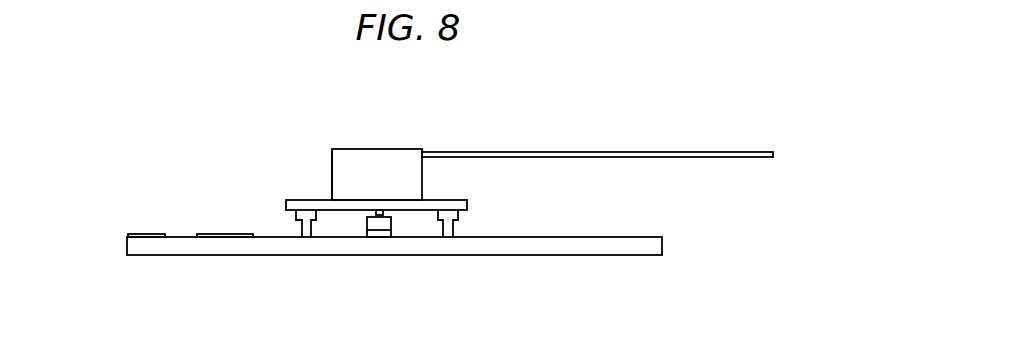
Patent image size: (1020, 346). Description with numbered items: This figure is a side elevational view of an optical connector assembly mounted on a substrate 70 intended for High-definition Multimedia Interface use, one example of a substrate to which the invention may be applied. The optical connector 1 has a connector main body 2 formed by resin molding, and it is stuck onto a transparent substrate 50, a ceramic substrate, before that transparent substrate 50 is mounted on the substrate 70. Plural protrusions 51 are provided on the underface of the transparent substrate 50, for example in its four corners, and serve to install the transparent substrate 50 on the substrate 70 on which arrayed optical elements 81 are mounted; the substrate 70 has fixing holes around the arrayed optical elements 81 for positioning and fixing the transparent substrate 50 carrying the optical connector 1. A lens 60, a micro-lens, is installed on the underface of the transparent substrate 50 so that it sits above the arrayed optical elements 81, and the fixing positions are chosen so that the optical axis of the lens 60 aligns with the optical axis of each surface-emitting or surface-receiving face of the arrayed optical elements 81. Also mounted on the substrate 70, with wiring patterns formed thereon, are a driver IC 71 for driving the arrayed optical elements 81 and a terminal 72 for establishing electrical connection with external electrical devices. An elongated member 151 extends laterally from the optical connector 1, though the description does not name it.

The optical connector 1 is at (378, 148).
The connector main body 2 is at (332, 178).
The lead arm 151 is at (730, 152).
The transparent substrate 50 is at (467, 204).
The protrusions 51 is at (453, 233).
The arrayed optical elements 81 is at (365, 225).
The lens 60 is at (383, 211).
The substrate 70 is at (663, 247).
The driver IC 71 is at (220, 234).
The terminal 72 is at (142, 234).